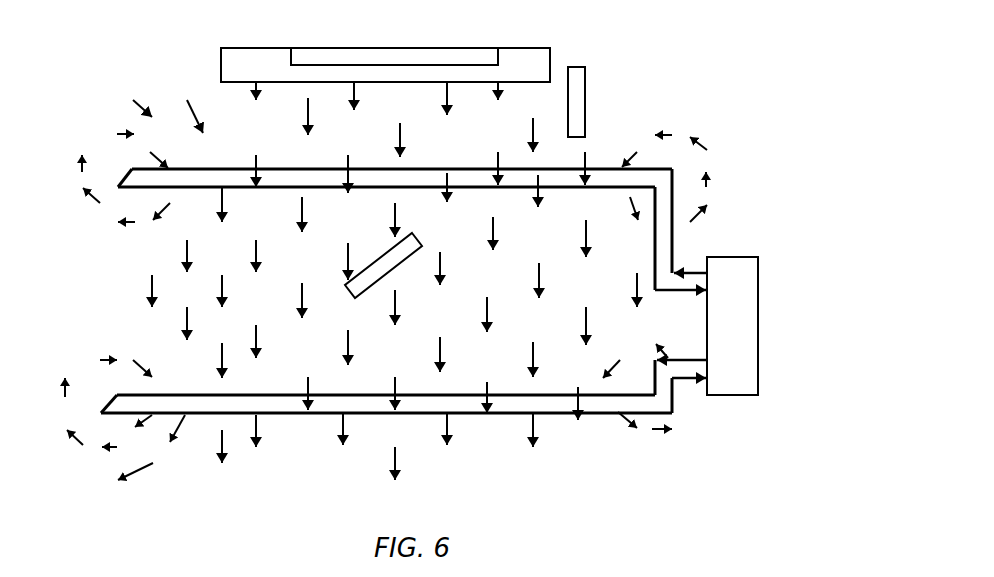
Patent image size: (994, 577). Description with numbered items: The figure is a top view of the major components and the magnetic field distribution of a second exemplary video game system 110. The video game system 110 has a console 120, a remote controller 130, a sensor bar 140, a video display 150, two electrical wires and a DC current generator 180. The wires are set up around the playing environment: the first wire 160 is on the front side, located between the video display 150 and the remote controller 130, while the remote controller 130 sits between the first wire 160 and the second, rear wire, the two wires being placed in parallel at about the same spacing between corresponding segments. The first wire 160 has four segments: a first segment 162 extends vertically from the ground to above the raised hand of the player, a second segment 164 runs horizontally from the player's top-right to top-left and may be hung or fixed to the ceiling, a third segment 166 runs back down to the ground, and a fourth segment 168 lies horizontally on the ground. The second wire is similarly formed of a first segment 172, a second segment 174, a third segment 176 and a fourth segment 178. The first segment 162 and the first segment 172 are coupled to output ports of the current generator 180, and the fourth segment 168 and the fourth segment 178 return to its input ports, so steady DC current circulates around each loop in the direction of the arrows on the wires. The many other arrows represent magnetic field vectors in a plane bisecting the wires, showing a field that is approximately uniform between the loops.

The video game system 110 is at (699, 44).
The console 120 is at (585, 83).
The remote controller 130 is at (412, 234).
The sensor bar 140 is at (375, 47).
The video display 150 is at (522, 48).
The first wire 160 is at (600, 168).
The first segment 162 is at (672, 168).
The second segment 164 is at (310, 168).
The third segment 166 is at (132, 168).
The fourth segment 168 is at (482, 187).
The first segment 172 is at (655, 395).
The second segment 174 is at (273, 398).
The third segment 176 is at (115, 394).
The fourth segment 178 is at (463, 413).
The DC current generator 180 is at (727, 258).